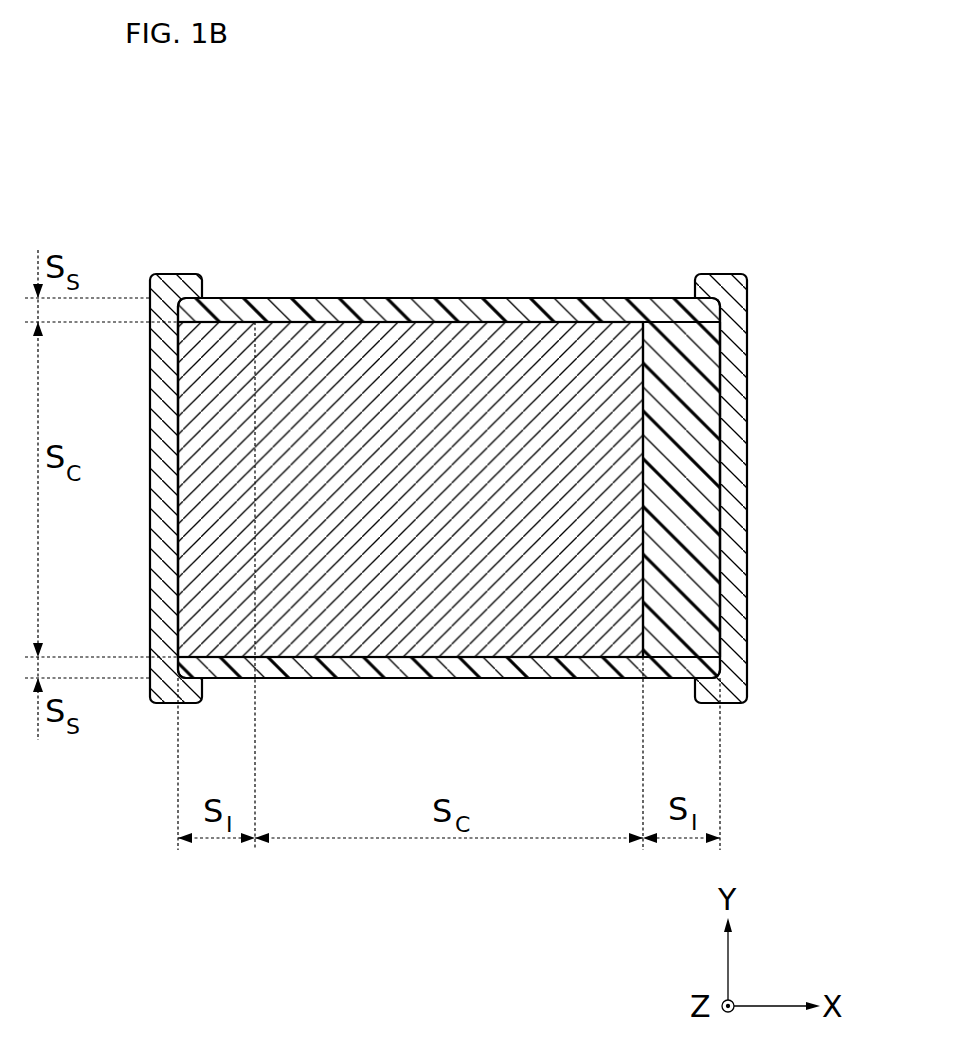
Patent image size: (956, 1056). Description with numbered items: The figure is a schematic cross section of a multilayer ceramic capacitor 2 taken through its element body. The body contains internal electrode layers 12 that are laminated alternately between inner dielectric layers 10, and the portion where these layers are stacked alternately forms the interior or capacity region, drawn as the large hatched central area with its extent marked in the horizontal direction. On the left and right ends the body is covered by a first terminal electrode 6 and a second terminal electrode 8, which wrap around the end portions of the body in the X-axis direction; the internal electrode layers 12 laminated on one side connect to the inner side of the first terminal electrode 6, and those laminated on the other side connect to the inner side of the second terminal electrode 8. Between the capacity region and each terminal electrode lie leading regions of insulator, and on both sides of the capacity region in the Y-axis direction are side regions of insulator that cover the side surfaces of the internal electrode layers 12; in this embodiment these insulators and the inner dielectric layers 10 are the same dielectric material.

The multilayer ceramic capacitor 2 is at (452, 437).
The first terminal electrode 6 is at (166, 422).
The second terminal electrode 8 is at (735, 412).
The inner dielectric layers 10 is at (695, 481).
The internal electrode layers 12 is at (512, 327).